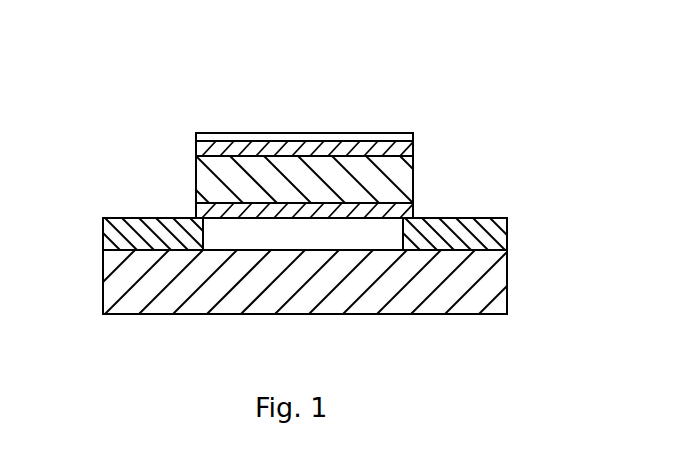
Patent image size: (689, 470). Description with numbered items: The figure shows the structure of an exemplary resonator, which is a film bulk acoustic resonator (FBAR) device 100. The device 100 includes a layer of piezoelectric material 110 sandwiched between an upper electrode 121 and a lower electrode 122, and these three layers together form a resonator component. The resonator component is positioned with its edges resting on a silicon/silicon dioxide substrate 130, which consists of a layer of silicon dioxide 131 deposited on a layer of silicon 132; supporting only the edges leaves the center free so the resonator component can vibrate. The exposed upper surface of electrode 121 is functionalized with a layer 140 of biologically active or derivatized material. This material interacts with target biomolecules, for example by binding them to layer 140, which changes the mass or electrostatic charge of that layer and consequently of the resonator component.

The device 100 is at (249, 67).
The layer of piezoelectric material 110 is at (413, 182).
The electrode 121 is at (196, 147).
The electrode 122 is at (196, 210).
The silicon/silicon dioxide substrate 130 is at (95, 218).
The layer of silicon dioxide 131 is at (507, 232).
The layer of silicon 132 is at (507, 272).
The layer of biologically active or derivatized material 140 is at (385, 133).